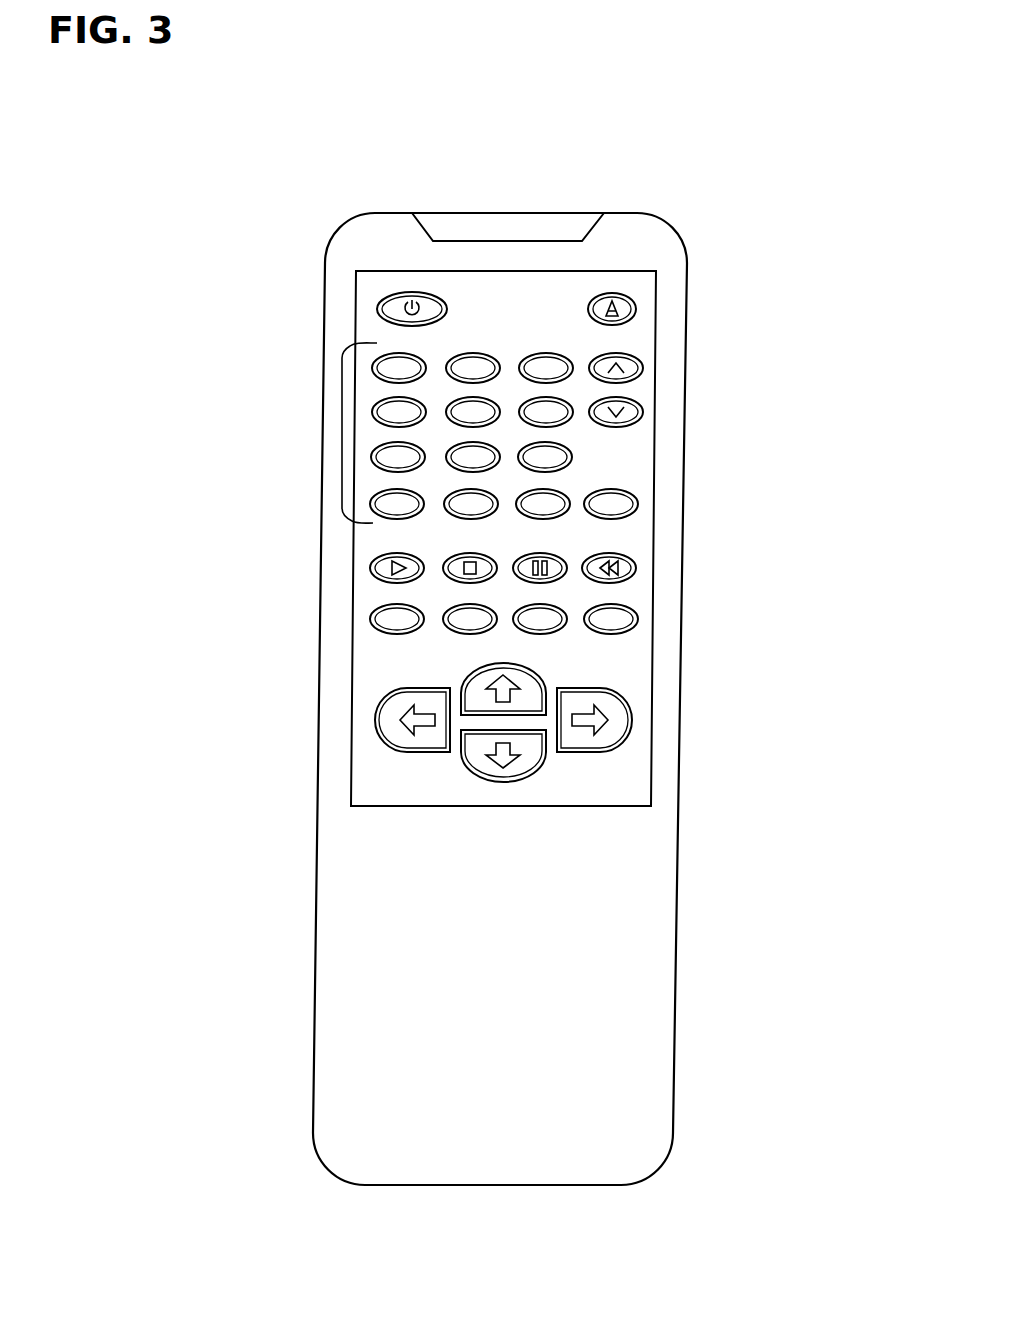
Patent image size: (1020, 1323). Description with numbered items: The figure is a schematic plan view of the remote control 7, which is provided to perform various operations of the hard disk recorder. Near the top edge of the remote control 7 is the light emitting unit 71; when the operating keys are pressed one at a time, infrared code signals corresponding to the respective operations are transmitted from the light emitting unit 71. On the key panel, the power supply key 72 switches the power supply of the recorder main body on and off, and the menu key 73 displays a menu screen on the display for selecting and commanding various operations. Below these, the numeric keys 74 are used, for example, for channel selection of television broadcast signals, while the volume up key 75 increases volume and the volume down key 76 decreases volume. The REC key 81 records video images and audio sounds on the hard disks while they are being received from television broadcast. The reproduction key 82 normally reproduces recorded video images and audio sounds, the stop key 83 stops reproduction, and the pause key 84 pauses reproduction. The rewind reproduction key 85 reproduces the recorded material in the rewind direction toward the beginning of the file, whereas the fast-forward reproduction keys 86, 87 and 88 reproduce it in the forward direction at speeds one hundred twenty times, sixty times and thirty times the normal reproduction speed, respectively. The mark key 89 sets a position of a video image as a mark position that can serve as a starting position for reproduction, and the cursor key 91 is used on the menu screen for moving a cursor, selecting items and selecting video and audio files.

The remote control 7 is at (533, 75).
The light emitting unit 71 is at (523, 220).
The power supply key 72 is at (390, 305).
The menu key 73 is at (628, 301).
The numeric keys 74 is at (342, 435).
The volume up key 75 is at (630, 363).
The volume down key 76 is at (630, 408).
The REC key 81 is at (626, 492).
The reproduction key 82 is at (381, 564).
The stop key 83 is at (457, 572).
The pause key 84 is at (553, 562).
The rewind reproduction key 85 is at (621, 564).
The fast-forward reproduction key 86 is at (380, 622).
The fast-forward reproduction key 87 is at (450, 633).
The fast-forward reproduction key 88 is at (547, 620).
The mark key 89 is at (632, 627).
The cursor key 91 is at (371, 760).